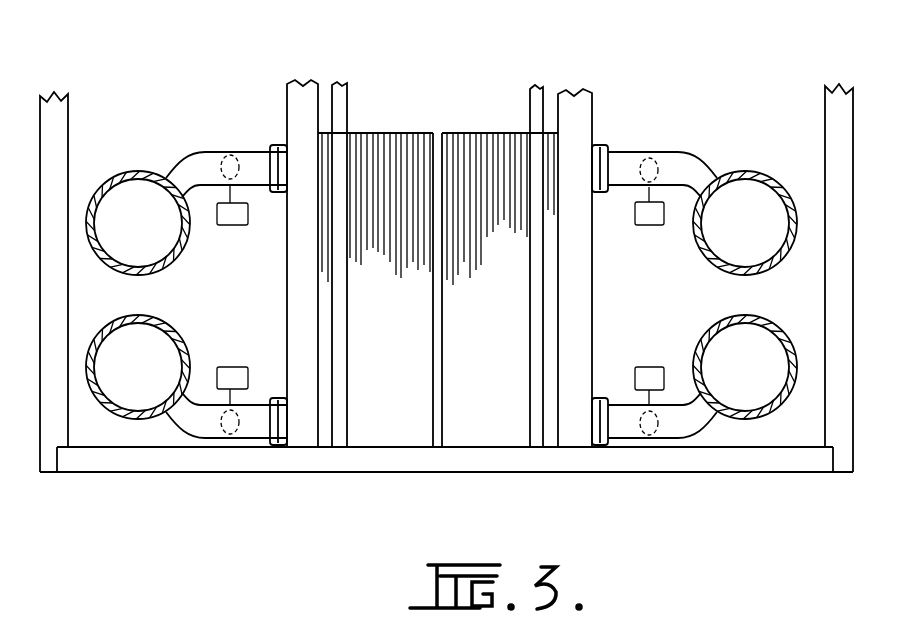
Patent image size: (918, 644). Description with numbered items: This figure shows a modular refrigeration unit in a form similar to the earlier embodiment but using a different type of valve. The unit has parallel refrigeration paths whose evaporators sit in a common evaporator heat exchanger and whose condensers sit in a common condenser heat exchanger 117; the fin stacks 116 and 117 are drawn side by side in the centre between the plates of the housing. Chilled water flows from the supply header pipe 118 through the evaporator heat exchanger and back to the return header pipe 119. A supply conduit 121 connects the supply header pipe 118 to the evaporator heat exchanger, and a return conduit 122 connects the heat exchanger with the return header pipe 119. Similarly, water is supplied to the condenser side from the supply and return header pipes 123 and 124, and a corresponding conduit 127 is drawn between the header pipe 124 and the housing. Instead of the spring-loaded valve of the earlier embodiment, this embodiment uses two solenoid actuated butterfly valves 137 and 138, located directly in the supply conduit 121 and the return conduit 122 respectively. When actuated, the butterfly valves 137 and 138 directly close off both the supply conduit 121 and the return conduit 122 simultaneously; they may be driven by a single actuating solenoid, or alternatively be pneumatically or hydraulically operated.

The first fin stack 116 is at (385, 138).
The condenser heat exchanger 117 is at (495, 138).
The supply header pipe 118 is at (143, 173).
The return header pipe 119 is at (145, 418).
The supply conduit 121 is at (243, 163).
The return conduit 122 is at (250, 427).
The supply header pipe 123 is at (762, 417).
The return header pipe 124 is at (747, 170).
The upper right connecting pipe 127 is at (630, 155).
The solenoid actuated butterfly valve 137 is at (227, 227).
The solenoid actuated butterfly valve 138 is at (233, 365).